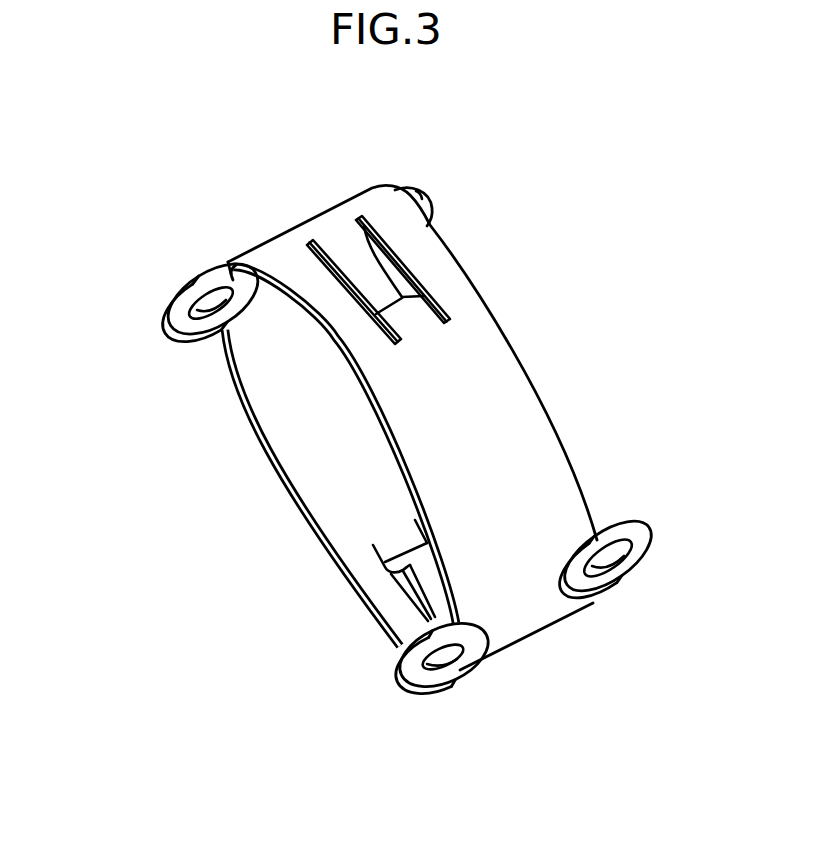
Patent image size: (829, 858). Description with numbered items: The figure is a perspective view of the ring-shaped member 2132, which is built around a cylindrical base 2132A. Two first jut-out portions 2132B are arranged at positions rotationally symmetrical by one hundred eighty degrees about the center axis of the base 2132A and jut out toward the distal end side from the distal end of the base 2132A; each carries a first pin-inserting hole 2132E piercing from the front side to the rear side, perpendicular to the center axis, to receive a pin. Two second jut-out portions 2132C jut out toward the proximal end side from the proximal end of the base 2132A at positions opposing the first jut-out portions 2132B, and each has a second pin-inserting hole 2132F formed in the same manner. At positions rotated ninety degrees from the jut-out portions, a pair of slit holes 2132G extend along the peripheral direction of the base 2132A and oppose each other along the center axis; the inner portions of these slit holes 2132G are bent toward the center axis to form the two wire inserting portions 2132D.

The ring-shaped member 2132 is at (96, 172).
The cylindrical base 2132A is at (540, 428).
The first jut-out portion 2132B is at (172, 302).
The second jut-out portion 2132C is at (420, 194).
The wire inserting portion 2132D is at (362, 267).
The first pin-inserting hole 2132E is at (217, 312).
The second pin-inserting hole 2132F is at (612, 567).
The slit hole 2132G is at (331, 253).